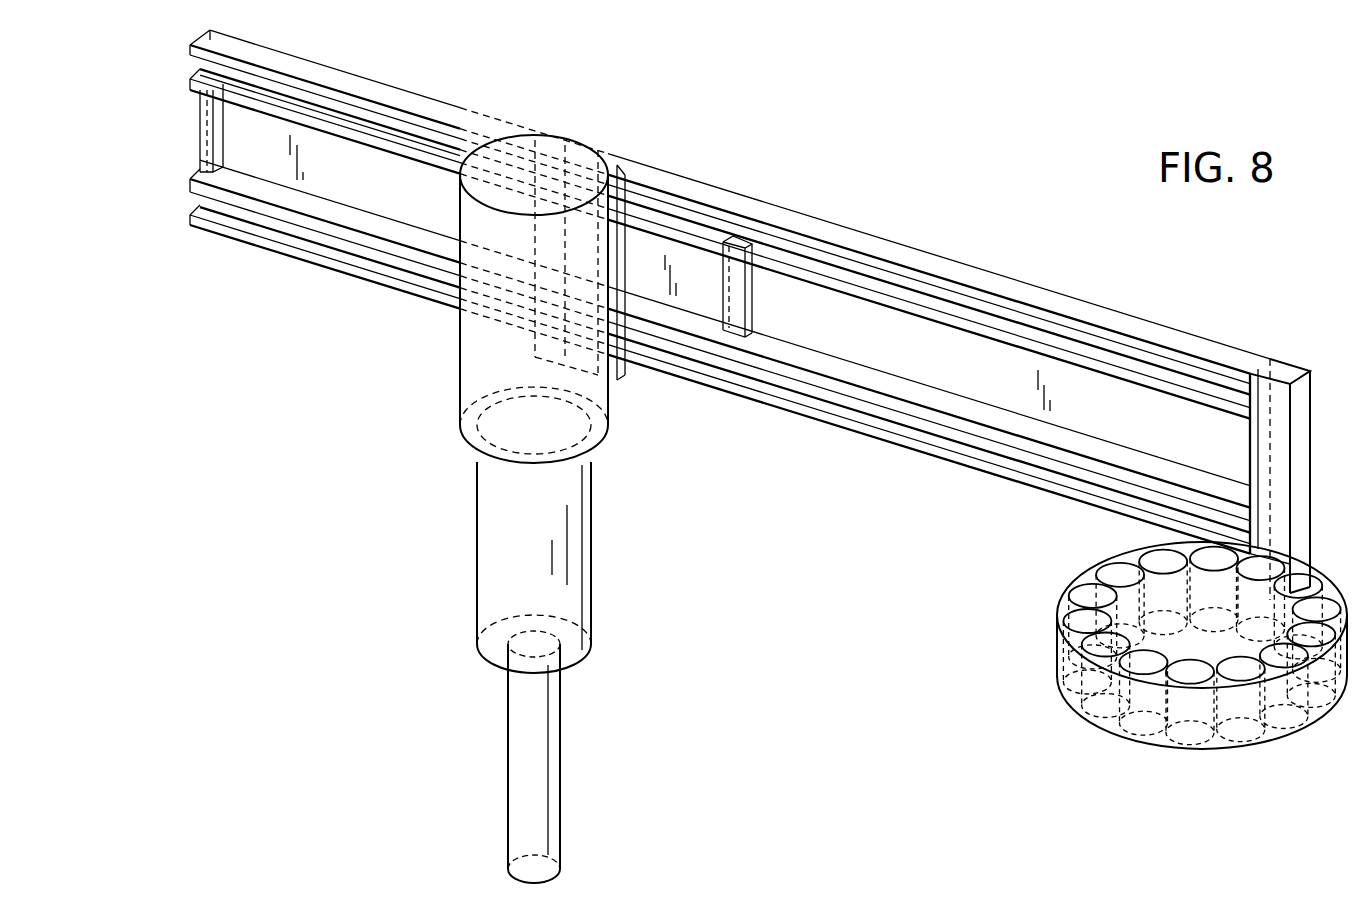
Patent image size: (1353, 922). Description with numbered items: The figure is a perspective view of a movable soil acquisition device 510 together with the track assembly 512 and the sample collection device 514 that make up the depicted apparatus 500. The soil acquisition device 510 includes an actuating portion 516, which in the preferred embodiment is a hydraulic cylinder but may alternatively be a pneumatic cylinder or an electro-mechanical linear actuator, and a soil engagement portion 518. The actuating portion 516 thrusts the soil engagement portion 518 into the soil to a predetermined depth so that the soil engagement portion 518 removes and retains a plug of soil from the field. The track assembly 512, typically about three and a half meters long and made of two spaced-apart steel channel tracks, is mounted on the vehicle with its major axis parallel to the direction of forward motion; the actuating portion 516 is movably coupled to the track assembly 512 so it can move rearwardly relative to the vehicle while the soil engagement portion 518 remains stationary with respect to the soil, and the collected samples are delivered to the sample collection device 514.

The sample handling system 500 is at (766, 797).
The soil acquisition device 510 is at (440, 568).
The track assembly 512 is at (818, 151).
The sample collection device 514 is at (1078, 745).
The actuating portion 516 is at (465, 355).
The soil engagement portion 518 is at (520, 767).